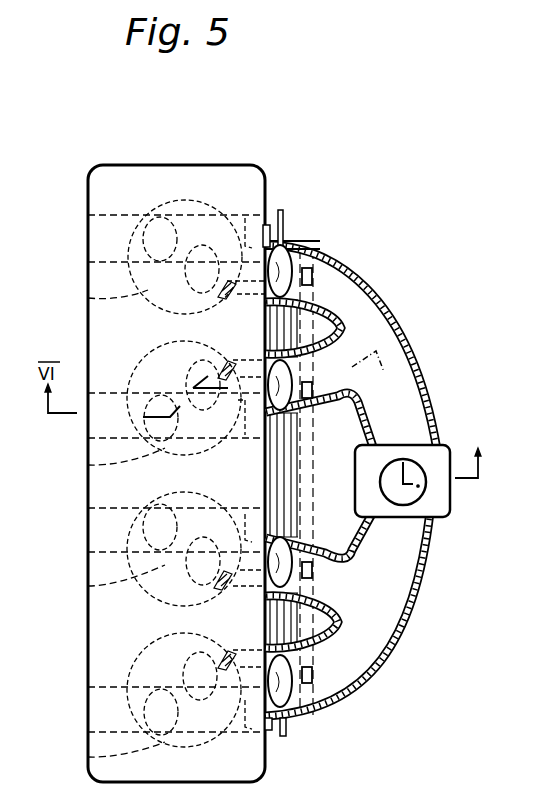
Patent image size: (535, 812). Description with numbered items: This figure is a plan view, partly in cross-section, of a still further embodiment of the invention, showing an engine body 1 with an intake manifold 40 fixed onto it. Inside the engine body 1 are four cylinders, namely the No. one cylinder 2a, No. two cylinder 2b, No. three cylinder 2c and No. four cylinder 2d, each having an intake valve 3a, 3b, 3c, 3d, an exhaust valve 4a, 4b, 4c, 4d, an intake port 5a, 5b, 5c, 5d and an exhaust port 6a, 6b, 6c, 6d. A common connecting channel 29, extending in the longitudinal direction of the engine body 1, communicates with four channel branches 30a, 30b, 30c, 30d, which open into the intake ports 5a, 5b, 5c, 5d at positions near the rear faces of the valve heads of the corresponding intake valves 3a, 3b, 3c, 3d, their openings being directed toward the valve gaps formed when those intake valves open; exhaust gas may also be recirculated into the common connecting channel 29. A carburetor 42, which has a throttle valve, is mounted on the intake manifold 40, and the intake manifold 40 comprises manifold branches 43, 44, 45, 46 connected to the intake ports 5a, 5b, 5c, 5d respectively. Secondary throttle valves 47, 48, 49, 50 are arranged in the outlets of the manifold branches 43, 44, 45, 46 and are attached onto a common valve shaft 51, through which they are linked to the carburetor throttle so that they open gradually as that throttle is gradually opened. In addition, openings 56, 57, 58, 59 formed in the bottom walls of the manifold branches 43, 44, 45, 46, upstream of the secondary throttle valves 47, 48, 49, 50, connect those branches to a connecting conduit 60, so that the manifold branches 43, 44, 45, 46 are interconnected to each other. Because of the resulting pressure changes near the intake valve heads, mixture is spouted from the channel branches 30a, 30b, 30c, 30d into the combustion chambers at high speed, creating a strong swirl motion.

The engine body 1 is at (279, 184).
The No. 1 cylinder 2a is at (88, 298).
The No. 2 cylinder 2b is at (88, 467).
The No. 3 cylinder 2c is at (88, 586).
The No. 4 cylinder 2d is at (88, 757).
The intake valve 3a is at (205, 246).
The intake valve 3b is at (203, 360).
The intake valve 3c is at (205, 537).
The intake valve 3d is at (192, 652).
The exhaust valve 4a is at (162, 216).
The exhaust valve 4b is at (157, 394).
The exhaust valve 4c is at (160, 503).
The exhaust valve 4d is at (152, 688).
The intake port 5a is at (245, 223).
The intake port 5b is at (244, 428).
The intake port 5c is at (241, 518).
The intake port 5d is at (242, 723).
The exhaust port 6a is at (111, 214).
The exhaust port 6b is at (110, 393).
The exhaust port 6c is at (108, 508).
The exhaust port 6d is at (106, 687).
The common connecting channel 29 is at (322, 311).
The channel branch 30a is at (240, 302).
The channel branch 30b is at (240, 357).
The channel branch 30c is at (239, 594).
The channel branch 30d is at (239, 649).
The intake manifold 40 is at (417, 303).
The carburetor 42 is at (450, 452).
The manifold branch 43 is at (313, 262).
The manifold branch 44 is at (334, 405).
The manifold branch 45 is at (318, 548).
The manifold branch 46 is at (318, 688).
The secondary throttle valve 47 is at (283, 266).
The secondary throttle valve 48 is at (289, 400).
The secondary throttle valve 49 is at (285, 549).
The secondary throttle valve 50 is at (290, 702).
The common valve shaft 51 is at (283, 737).
The opening 56 is at (313, 276).
The opening 57 is at (313, 390).
The opening 58 is at (313, 570).
The opening 59 is at (313, 674).
The connecting conduit 60 is at (332, 611).